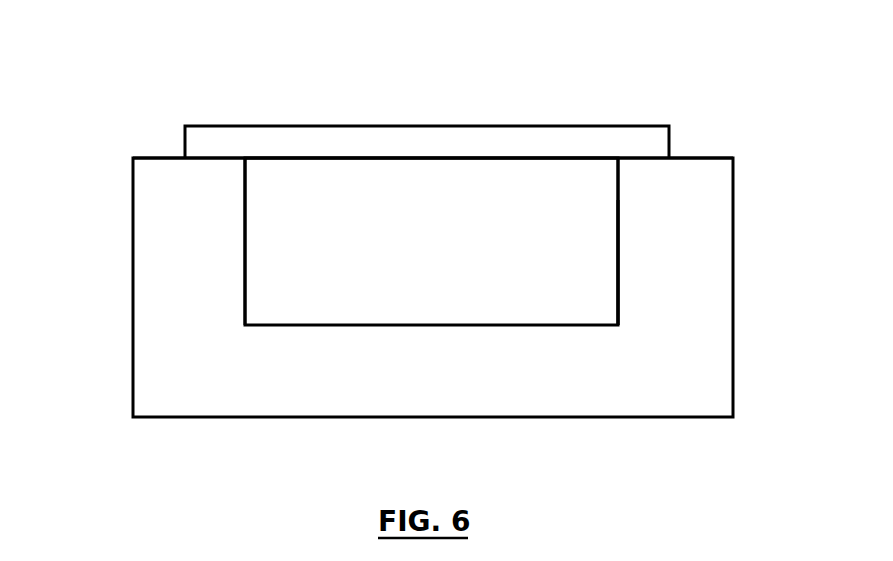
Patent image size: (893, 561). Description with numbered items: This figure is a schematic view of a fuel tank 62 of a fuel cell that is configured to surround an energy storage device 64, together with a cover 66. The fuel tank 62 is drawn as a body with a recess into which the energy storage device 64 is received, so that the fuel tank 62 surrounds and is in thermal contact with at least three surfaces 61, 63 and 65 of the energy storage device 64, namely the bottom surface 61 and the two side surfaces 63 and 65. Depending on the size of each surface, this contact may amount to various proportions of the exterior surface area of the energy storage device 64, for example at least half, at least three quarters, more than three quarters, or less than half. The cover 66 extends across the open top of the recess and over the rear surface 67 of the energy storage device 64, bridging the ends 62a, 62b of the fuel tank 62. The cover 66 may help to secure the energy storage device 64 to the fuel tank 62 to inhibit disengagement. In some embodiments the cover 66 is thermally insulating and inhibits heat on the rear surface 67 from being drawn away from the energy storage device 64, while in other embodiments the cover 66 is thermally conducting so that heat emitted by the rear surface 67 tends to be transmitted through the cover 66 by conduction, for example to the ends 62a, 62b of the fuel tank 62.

The surface 61 is at (525, 334).
The fuel tank 62 is at (133, 312).
The end of the fuel tank 62a is at (167, 158).
The end of the fuel tank 62b is at (683, 158).
The surface 63 is at (237, 217).
The energy storage device 64 is at (618, 213).
The surface 65 is at (626, 280).
The cover 66 is at (320, 126).
The rear surface 67 is at (442, 150).